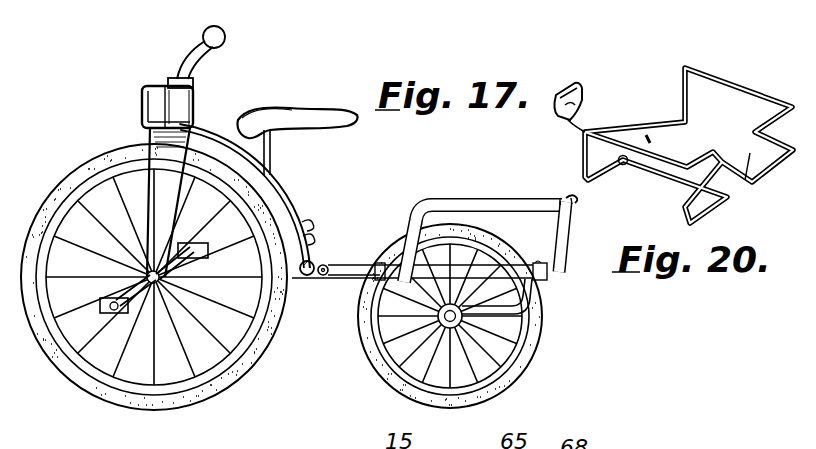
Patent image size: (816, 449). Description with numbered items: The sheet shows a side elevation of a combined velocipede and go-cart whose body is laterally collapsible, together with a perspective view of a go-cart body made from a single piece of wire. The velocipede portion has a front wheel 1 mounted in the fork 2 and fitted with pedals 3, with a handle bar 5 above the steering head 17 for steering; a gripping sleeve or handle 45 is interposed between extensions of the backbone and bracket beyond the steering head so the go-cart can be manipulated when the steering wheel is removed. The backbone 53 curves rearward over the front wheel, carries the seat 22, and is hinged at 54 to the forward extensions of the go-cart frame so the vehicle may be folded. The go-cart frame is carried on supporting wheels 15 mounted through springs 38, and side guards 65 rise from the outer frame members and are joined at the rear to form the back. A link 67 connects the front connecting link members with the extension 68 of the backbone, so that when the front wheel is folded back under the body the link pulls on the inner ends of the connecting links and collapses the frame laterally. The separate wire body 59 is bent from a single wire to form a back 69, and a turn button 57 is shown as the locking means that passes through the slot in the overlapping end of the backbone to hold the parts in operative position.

In FIG. 17, the front wheel 1 is at (66, 193).
In FIG. 17, the fork 2 is at (168, 202).
In FIG. 17, the pedals 3 is at (103, 308).
In FIG. 17, the handle bar 5 is at (182, 56).
In FIG. 17, the supporting wheels 15 is at (539, 335).
In FIG. 17, the steering head 17 is at (178, 113).
In FIG. 17, the seat 22 is at (284, 116).
In FIG. 17, the springs 38 is at (536, 304).
In FIG. 17, the gripping sleeve or handle 45 is at (141, 105).
In FIG. 17, the backbone 53 is at (211, 135).
In FIG. 17, the hinge 54 is at (306, 277).
In FIG. 20, the turn button 57 is at (585, 102).
In FIG. 20, the wire body 59 is at (731, 89).
In FIG. 17, the side guards 65 is at (486, 204).
In FIG. 17, the link 67 is at (355, 263).
In FIG. 17, the extension of the backbone 68 is at (324, 263).
In FIG. 20, the back 69 is at (745, 180).